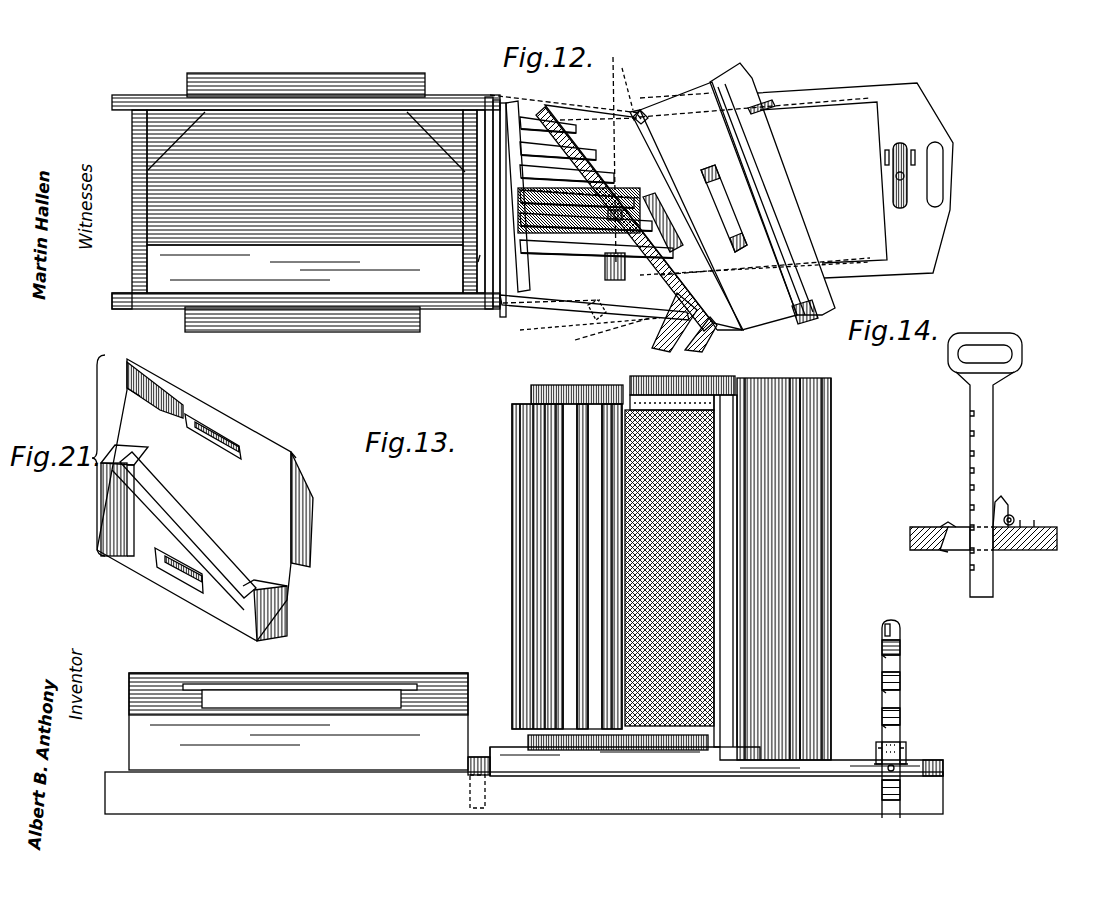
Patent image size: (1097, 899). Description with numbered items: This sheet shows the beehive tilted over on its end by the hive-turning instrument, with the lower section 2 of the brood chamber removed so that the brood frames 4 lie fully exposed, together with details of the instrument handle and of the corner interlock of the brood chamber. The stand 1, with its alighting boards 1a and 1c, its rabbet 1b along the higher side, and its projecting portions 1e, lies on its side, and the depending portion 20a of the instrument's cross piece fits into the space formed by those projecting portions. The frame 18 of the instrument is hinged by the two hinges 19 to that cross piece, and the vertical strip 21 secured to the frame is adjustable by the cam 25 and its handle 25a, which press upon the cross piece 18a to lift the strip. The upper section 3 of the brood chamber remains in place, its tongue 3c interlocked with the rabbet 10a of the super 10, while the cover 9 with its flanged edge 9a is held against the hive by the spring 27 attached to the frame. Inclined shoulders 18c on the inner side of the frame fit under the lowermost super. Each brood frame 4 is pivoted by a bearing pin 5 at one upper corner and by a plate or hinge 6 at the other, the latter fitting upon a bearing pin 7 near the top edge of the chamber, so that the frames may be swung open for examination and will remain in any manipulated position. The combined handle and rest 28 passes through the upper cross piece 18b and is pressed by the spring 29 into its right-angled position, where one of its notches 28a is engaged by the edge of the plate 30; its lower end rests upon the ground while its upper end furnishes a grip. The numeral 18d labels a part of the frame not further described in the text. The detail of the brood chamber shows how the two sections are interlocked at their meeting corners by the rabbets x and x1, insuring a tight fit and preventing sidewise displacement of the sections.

In FIG. 12, the stand 1 is at (126, 258).
In FIG. 13, the stand 1 is at (524, 743).
In FIG. 12, the alighting board 1a is at (272, 347).
In FIG. 13, the alighting board 1a is at (291, 688).
In FIG. 12, the rabbet 1b is at (176, 310).
In FIG. 13, the rabbet 1b is at (168, 676).
In FIG. 12, the alighting board 1c is at (320, 75).
In FIG. 13, the alighting board 1c is at (540, 780).
In FIG. 12, the projecting portions 1e is at (487, 98).
In FIG. 12, the lower section of brood chamber 2 is at (590, 331).
In FIG. 21, the lower section of brood chamber 2 is at (184, 531).
In FIG. 12, the upper section of brood chamber 3 is at (618, 110).
In FIG. 21, the upper section of brood chamber 3 is at (205, 500).
In FIG. 13, the upper section of brood chamber 3 is at (726, 752).
In FIG. 12, the tongue 3c is at (646, 118).
In FIG. 21, the tongue 3c is at (293, 452).
In FIG. 12, the brood frames 4 is at (573, 158).
In FIG. 13, the brood frames 4 is at (535, 509).
In FIG. 13, the bearing pin 5 is at (548, 385).
In FIG. 12, the plate or hinge 6 is at (755, 265).
In FIG. 12, the bearing pin 7 is at (720, 318).
In FIG. 13, the bearing pin 7 is at (668, 380).
In FIG. 12, the top or cover 9 is at (775, 216).
In FIG. 13, the top or cover 9 is at (826, 542).
In FIG. 12, the flanged edge 9a is at (812, 318).
In FIG. 13, the flanged edge 9a is at (812, 616).
In FIG. 12, the super 10 is at (790, 313).
In FIG. 13, the super 10 is at (776, 656).
In FIG. 12, the rabbet 10a is at (642, 115).
In FIG. 13, the rabbet 10a is at (752, 762).
In FIG. 12, the frame 18 is at (806, 97).
In FIG. 13, the frame 18 is at (690, 762).
In FIG. 12, the cross piece 18a is at (612, 287).
In FIG. 12, the upper cross piece 18b is at (942, 214).
In FIG. 13, the upper cross piece 18b is at (940, 780).
In FIG. 14, the upper cross piece 18b is at (922, 528).
In FIG. 12, the inclined shoulders 18c is at (641, 112).
In FIG. 14, the inclined shoulders 18c is at (958, 554).
In FIG. 12, the locking plate strip 18d is at (592, 318).
In FIG. 13, the locking plate strip 18d is at (568, 752).
In FIG. 12, the hinges 19 is at (495, 133).
In FIG. 13, the hinges 19 is at (488, 757).
In FIG. 12, the depending portion 20a is at (479, 260).
In FIG. 13, the depending portion 20a is at (470, 766).
In FIG. 12, the vertical strip 21 is at (552, 230).
In FIG. 12, the cam 25 is at (745, 240).
In FIG. 12, the handle 25a is at (619, 79).
In FIG. 12, the spring 27 is at (772, 112).
In FIG. 12, the bar or strip 28 is at (895, 178).
In FIG. 13, the bar or strip 28 is at (898, 672).
In FIG. 14, the bar or strip 28 is at (995, 427).
In FIG. 13, the notches 28a is at (900, 716).
In FIG. 14, the notches 28a is at (970, 434).
In FIG. 12, the spring 29 is at (893, 160).
In FIG. 13, the spring 29 is at (906, 745).
In FIG. 14, the spring 29 is at (1006, 505).
In FIG. 12, the plate 30 is at (896, 193).
In FIG. 13, the plate 30 is at (888, 771).
In FIG. 14, the plate 30 is at (932, 538).
In FIG. 21, the rabbet x is at (132, 395).
In FIG. 21, the rabbet x1 is at (122, 460).